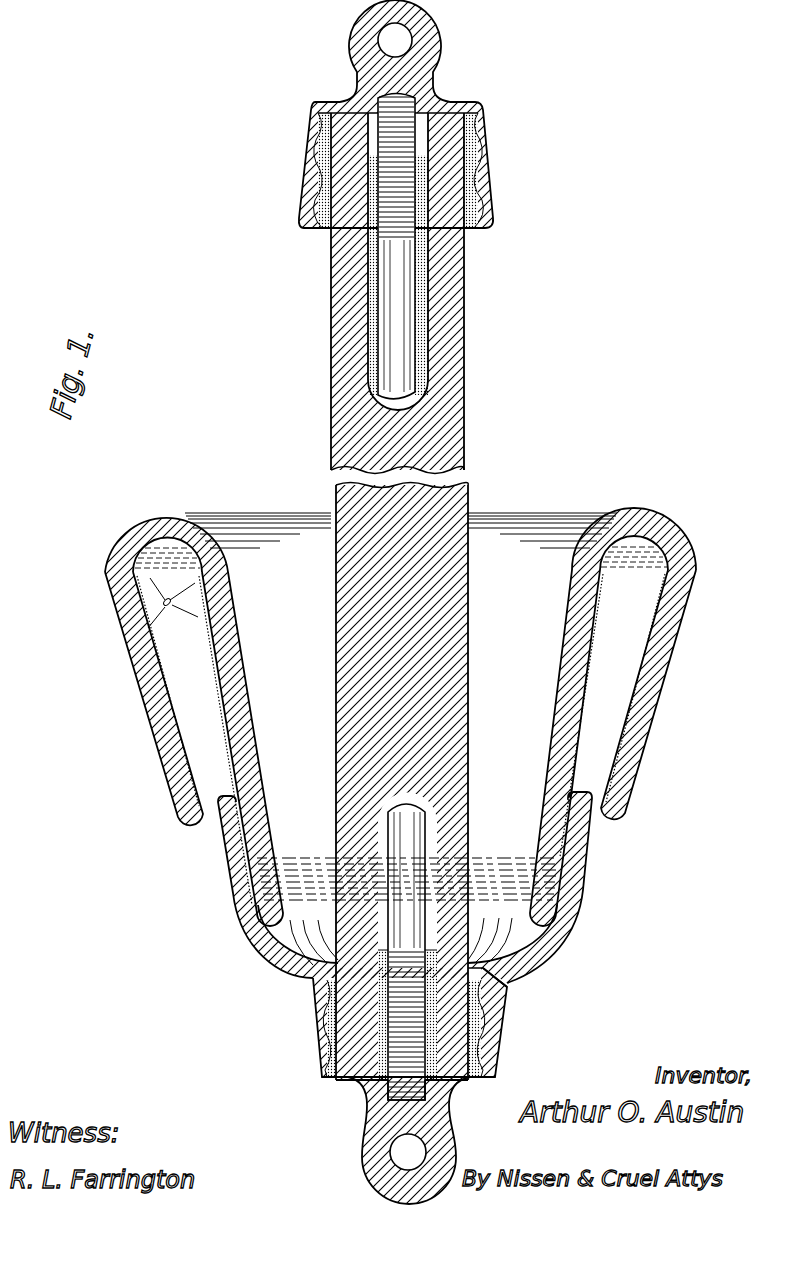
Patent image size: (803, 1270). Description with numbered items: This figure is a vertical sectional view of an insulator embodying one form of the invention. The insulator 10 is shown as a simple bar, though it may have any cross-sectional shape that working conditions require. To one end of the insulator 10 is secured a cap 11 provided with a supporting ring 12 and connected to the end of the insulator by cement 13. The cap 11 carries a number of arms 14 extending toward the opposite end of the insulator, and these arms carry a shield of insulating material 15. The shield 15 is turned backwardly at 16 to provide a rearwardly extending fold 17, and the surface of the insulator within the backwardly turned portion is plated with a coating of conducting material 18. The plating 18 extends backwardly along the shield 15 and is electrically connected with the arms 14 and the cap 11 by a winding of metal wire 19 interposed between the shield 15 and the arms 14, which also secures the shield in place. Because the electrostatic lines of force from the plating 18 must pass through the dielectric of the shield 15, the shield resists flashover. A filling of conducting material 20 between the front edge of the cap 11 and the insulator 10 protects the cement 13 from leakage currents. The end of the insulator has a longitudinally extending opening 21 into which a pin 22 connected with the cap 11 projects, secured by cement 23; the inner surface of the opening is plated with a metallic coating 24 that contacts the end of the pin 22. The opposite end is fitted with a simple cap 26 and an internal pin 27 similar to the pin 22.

The insulator 10 is at (352, 505).
The cap 11 is at (312, 1025).
The supporting ring 12 is at (438, 1143).
The cement 13 is at (500, 1010).
The arms 14 is at (240, 940).
The shield of insulating material 15 is at (242, 634).
The backwardly turned portion 16 is at (145, 518).
The rearwardly extending fold 17 is at (150, 713).
The plating of conducting material 18 is at (643, 663).
The winding of metal wire 19 is at (270, 893).
The filling of conducting material 20 is at (487, 977).
The longitudinally extending opening 21 is at (435, 1082).
The pin 22 is at (368, 1107).
The cement 23 is at (437, 1030).
The metallic coating 24 is at (422, 260).
The simple cap 26 is at (316, 183).
The internal pin 27 is at (395, 328).